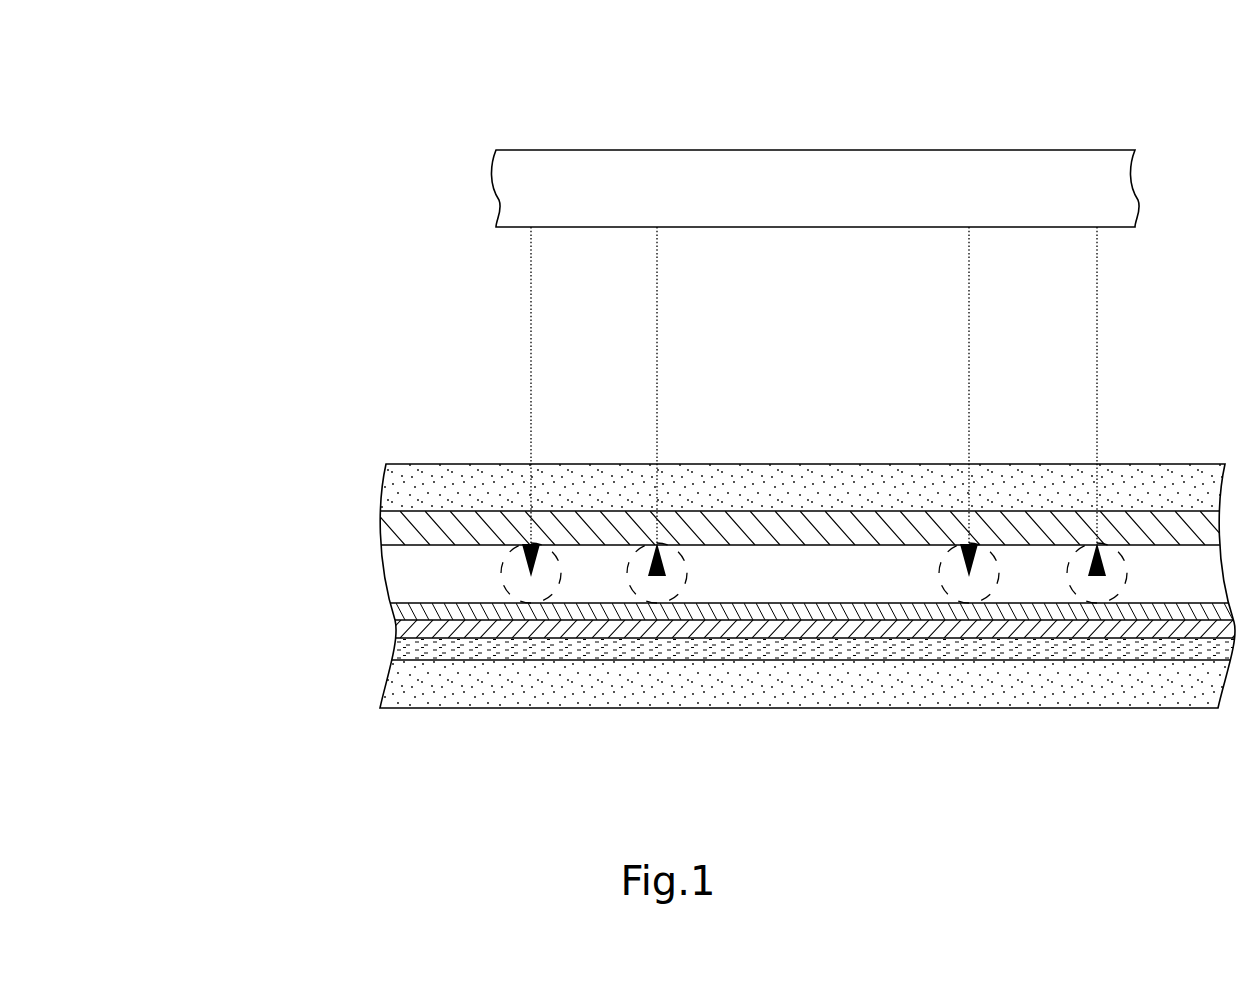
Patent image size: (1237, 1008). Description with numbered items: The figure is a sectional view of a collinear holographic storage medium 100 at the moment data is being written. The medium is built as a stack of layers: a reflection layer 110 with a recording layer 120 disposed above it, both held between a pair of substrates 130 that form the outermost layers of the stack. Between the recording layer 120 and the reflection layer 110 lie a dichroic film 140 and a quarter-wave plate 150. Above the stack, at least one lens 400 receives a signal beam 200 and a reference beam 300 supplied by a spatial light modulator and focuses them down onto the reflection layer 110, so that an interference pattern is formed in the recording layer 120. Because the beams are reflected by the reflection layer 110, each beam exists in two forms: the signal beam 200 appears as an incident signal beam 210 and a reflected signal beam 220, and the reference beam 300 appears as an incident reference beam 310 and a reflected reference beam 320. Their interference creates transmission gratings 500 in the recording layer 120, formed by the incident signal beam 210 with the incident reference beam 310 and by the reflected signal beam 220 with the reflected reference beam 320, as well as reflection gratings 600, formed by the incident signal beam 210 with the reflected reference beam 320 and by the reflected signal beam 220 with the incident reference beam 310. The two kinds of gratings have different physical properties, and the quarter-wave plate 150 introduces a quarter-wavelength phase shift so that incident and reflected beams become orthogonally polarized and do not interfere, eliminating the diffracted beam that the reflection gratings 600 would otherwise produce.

The collinear holographic storage medium 100 is at (230, 446).
The reflection layer 110 is at (397, 647).
The recording layer 120 is at (398, 577).
The substrates 130 is at (378, 490).
The dichroic film 140 is at (398, 627).
The quarter-wave plate 150 is at (398, 615).
The signal beam 200 is at (698, 84).
The incident signal beam 210 is at (530, 260).
The reflected signal beam 220 is at (657, 260).
The reference beam 300 is at (965, 84).
The incident reference beam 310 is at (969, 260).
The reflected reference beam 320 is at (1097, 260).
The lens 400 is at (510, 188).
The transmission gratings 500 is at (943, 595).
The reflection gratings 600 is at (1073, 550).